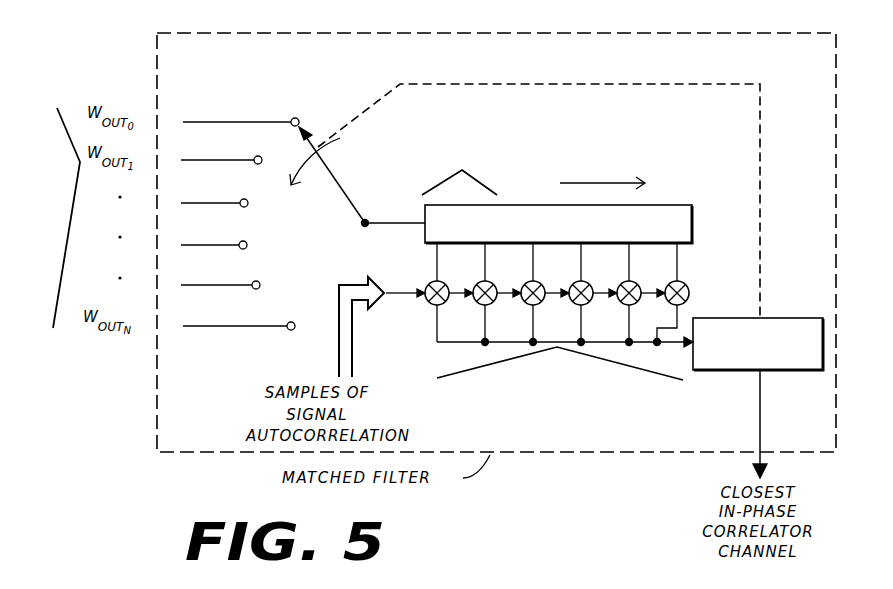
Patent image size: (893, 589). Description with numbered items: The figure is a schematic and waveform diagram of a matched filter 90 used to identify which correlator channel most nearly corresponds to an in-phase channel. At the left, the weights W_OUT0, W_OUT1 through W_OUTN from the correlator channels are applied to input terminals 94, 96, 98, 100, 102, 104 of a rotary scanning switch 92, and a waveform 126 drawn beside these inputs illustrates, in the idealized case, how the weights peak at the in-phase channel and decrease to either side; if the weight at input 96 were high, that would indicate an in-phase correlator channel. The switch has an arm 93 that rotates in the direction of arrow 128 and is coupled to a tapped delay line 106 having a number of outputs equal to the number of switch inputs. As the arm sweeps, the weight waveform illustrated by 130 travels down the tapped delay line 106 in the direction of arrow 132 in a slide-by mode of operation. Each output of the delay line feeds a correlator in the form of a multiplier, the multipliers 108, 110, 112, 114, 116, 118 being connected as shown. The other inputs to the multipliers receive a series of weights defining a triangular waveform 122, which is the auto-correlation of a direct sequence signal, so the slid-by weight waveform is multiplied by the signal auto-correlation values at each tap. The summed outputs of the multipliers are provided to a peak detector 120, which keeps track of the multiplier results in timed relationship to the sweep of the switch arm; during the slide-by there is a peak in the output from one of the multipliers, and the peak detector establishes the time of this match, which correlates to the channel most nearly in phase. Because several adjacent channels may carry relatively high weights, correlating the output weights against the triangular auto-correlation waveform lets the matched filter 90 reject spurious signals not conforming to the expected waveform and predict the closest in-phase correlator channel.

The matched filter 90 is at (462, 33).
The rotary scanning switch 92 is at (331, 111).
The arm 93 is at (311, 146).
The input terminal 94 is at (295, 117).
The input terminal 96 is at (258, 155).
The input terminal 98 is at (244, 198).
The input terminal 100 is at (243, 240).
The input terminal 102 is at (256, 280).
The input terminal 104 is at (291, 321).
The tapped delay line 106 is at (693, 213).
The multiplier 108 is at (446, 284).
The multiplier 110 is at (494, 284).
The multiplier 112 is at (542, 284).
The multiplier 114 is at (590, 284).
The multiplier 116 is at (638, 284).
The multiplier 118 is at (686, 284).
The peak detector 120 is at (770, 318).
The triangular waveform 122 is at (641, 372).
The waveform 126 is at (64, 257).
The arrow 128 is at (326, 152).
The waveform 130 is at (476, 168).
The arrow 132 is at (612, 183).